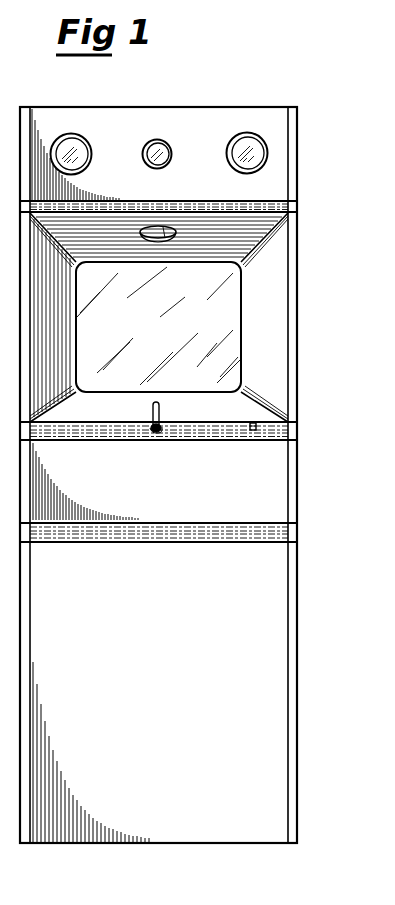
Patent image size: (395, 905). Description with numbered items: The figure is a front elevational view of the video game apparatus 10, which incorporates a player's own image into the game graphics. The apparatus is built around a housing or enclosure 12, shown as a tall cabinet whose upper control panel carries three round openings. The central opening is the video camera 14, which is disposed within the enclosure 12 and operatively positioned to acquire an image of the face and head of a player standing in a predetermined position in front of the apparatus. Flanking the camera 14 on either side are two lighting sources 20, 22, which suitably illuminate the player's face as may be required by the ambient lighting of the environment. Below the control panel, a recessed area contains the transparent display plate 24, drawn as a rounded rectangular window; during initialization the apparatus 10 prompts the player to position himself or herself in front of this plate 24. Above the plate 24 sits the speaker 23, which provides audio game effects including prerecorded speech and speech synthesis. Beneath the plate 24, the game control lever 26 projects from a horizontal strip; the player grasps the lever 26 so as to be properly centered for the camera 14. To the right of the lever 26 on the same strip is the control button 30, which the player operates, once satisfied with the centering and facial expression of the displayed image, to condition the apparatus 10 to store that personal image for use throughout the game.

The video game apparatus 10 is at (303, 159).
The housing or enclosure 12 is at (300, 234).
The video camera 14 is at (163, 139).
The lighting source 20 is at (78, 133).
The lighting source 22 is at (248, 133).
The speaker 23 is at (163, 240).
The transparent display plate 24 is at (233, 308).
The game control lever 26 is at (162, 405).
The control button 30 is at (253, 431).